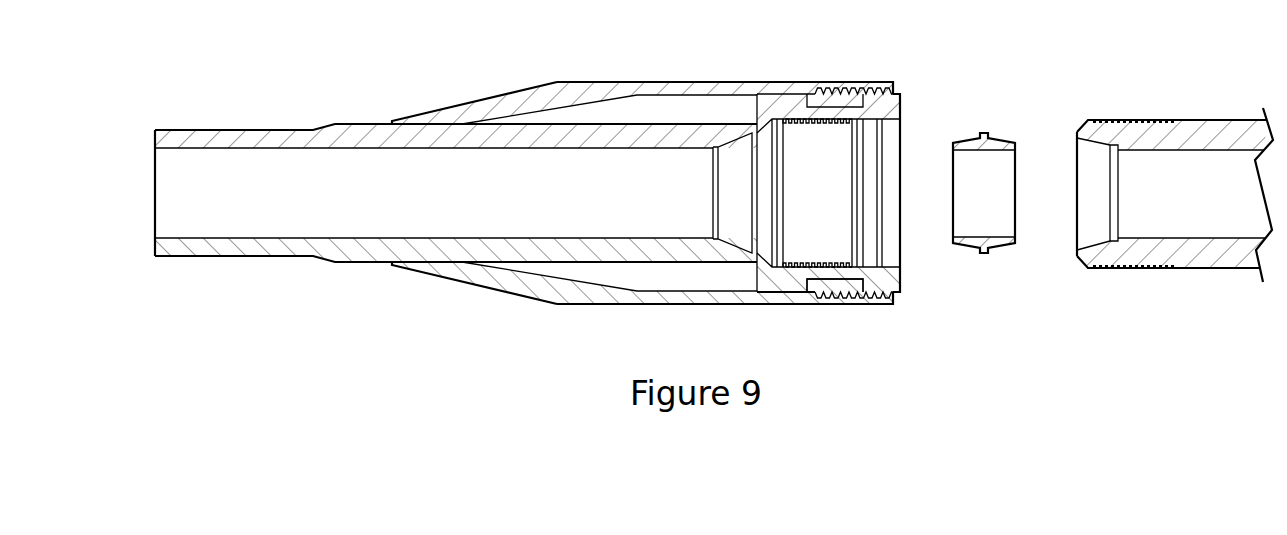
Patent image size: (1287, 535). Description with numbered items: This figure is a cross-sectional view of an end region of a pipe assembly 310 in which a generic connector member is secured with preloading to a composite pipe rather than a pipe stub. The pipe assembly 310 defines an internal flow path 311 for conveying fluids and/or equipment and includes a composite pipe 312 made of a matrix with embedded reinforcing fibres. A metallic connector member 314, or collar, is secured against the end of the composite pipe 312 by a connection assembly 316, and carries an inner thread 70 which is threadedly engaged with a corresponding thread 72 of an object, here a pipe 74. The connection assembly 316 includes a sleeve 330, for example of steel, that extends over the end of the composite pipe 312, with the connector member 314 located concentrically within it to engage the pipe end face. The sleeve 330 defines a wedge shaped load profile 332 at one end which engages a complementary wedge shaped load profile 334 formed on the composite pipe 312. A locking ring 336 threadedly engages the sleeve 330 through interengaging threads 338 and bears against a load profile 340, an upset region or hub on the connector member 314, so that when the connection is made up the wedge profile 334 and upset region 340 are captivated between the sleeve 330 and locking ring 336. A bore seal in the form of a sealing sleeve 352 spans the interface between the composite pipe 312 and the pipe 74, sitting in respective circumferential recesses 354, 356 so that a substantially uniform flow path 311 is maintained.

The pipe assembly 310 is at (203, 70).
The internal flow path 311 is at (434, 193).
The composite pipe 312 is at (195, 247).
The connector member 314 is at (773, 107).
The connection assembly 316 is at (872, 45).
The sleeve 330 is at (575, 80).
The wedge shaped load profile 332 is at (517, 100).
The wedge shaped load profile 334 is at (606, 118).
The locking ring 336 is at (897, 100).
The interengaging threads 338 is at (850, 88).
The load profile 340 is at (800, 283).
The sealing sleeve 352 is at (973, 243).
The circumferential recess 354 is at (729, 243).
The circumferential recess 356 is at (1093, 240).
The inner thread 70 is at (825, 123).
The thread 72 is at (1128, 120).
The pipe 74 is at (1217, 135).